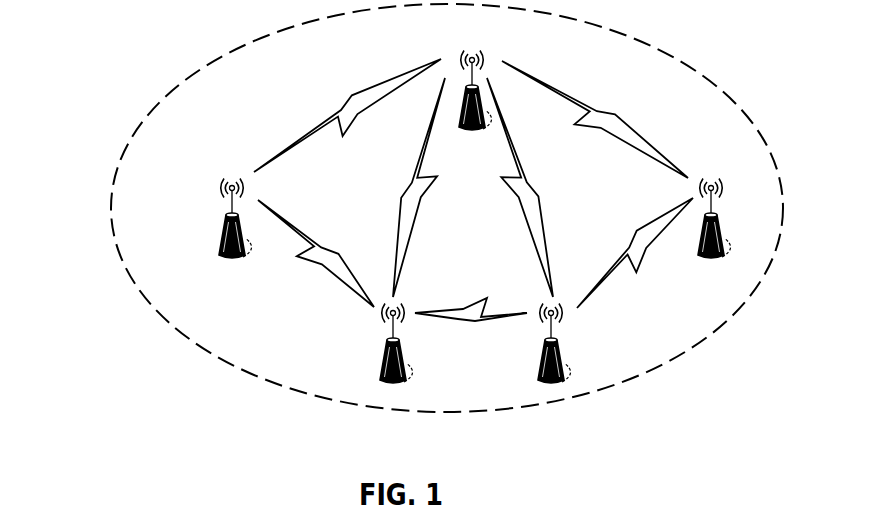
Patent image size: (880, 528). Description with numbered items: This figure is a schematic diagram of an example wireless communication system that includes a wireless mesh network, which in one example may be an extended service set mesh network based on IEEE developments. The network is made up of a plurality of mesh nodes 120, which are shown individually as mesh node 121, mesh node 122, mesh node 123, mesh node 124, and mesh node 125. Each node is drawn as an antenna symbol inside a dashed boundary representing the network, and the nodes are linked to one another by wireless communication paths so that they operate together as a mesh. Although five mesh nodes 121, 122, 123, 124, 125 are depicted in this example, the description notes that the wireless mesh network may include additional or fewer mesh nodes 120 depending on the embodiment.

The mesh nodes 120 is at (247, 142).
The mesh node 121 is at (225, 246).
The mesh node 122 is at (386, 371).
The mesh node 123 is at (540, 370).
The mesh node 124 is at (711, 259).
The mesh node 125 is at (468, 90).